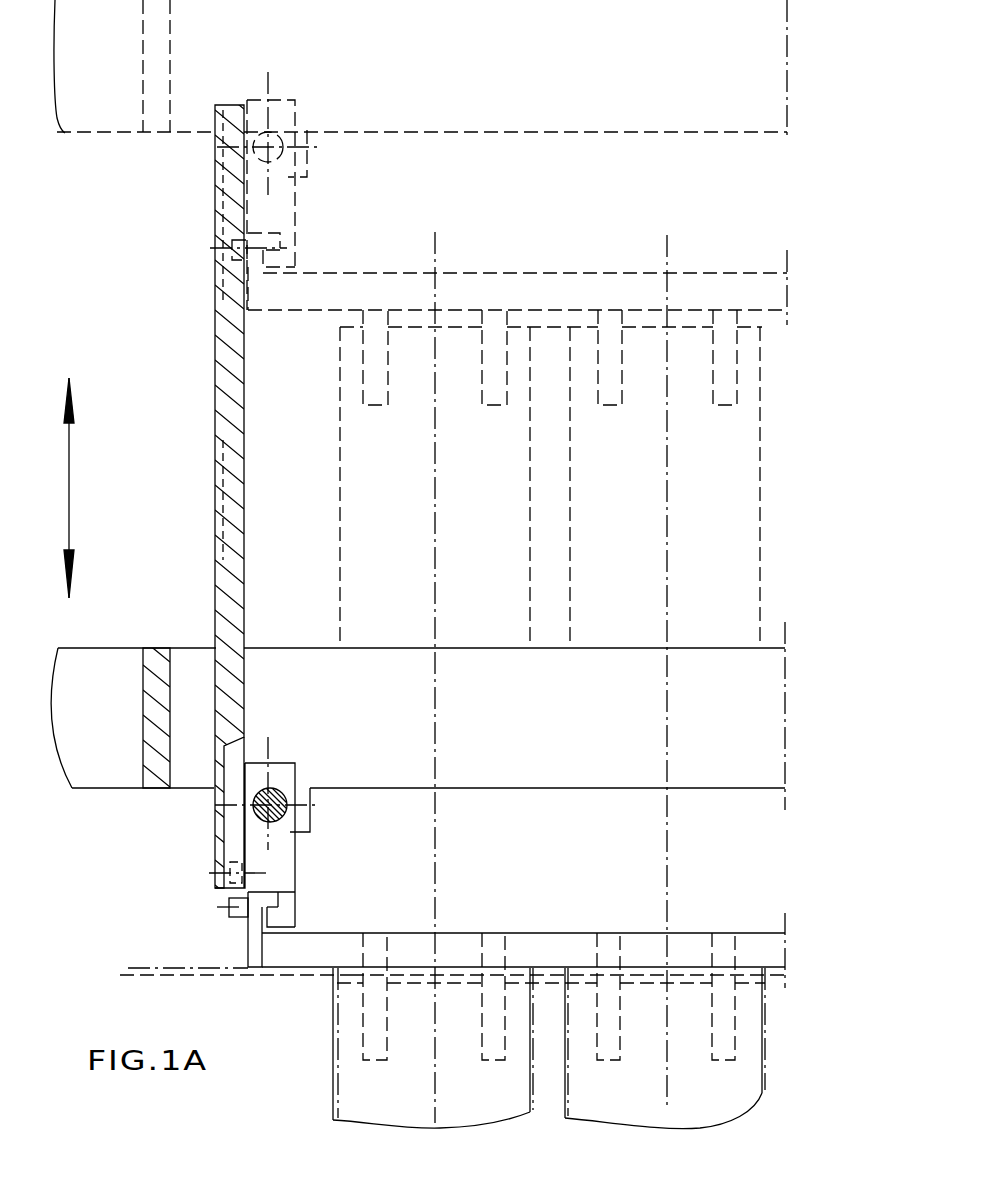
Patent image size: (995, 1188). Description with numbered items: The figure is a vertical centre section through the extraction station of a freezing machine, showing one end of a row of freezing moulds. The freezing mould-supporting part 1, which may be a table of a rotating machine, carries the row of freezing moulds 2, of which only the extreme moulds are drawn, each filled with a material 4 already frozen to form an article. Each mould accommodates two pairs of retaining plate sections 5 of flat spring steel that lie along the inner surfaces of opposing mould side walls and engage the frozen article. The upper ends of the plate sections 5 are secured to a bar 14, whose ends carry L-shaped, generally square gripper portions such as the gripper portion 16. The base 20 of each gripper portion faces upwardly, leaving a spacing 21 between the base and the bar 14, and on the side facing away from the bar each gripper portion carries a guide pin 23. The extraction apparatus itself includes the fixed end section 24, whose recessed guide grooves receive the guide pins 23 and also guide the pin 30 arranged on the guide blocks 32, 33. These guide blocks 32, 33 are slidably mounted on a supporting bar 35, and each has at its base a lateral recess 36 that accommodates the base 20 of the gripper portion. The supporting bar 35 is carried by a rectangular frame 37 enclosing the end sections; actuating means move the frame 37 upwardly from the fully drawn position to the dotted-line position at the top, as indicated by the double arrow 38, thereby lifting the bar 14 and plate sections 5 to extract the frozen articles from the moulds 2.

The freezing mould-supporting part 1 is at (140, 975).
The freezing mould 2 is at (363, 1108).
The frozen material / frozen article 4 is at (360, 540).
The plate section 5 is at (371, 405).
The bar 14 is at (505, 283).
The gripper portion 16 is at (255, 305).
The base of gripper portion 20 is at (270, 237).
The spacing 21 is at (273, 265).
The guide pin 23 is at (229, 905).
The end section 24 is at (215, 370).
The guide pin of guide block 30 is at (232, 870).
The guide block 32 is at (296, 496).
The guide block 33 is at (273, 103).
The supporting bar 35 is at (280, 138).
The lateral recess 36 is at (278, 905).
The rectangular frame 37 is at (65, 130).
The double arrow 38 is at (69, 497).